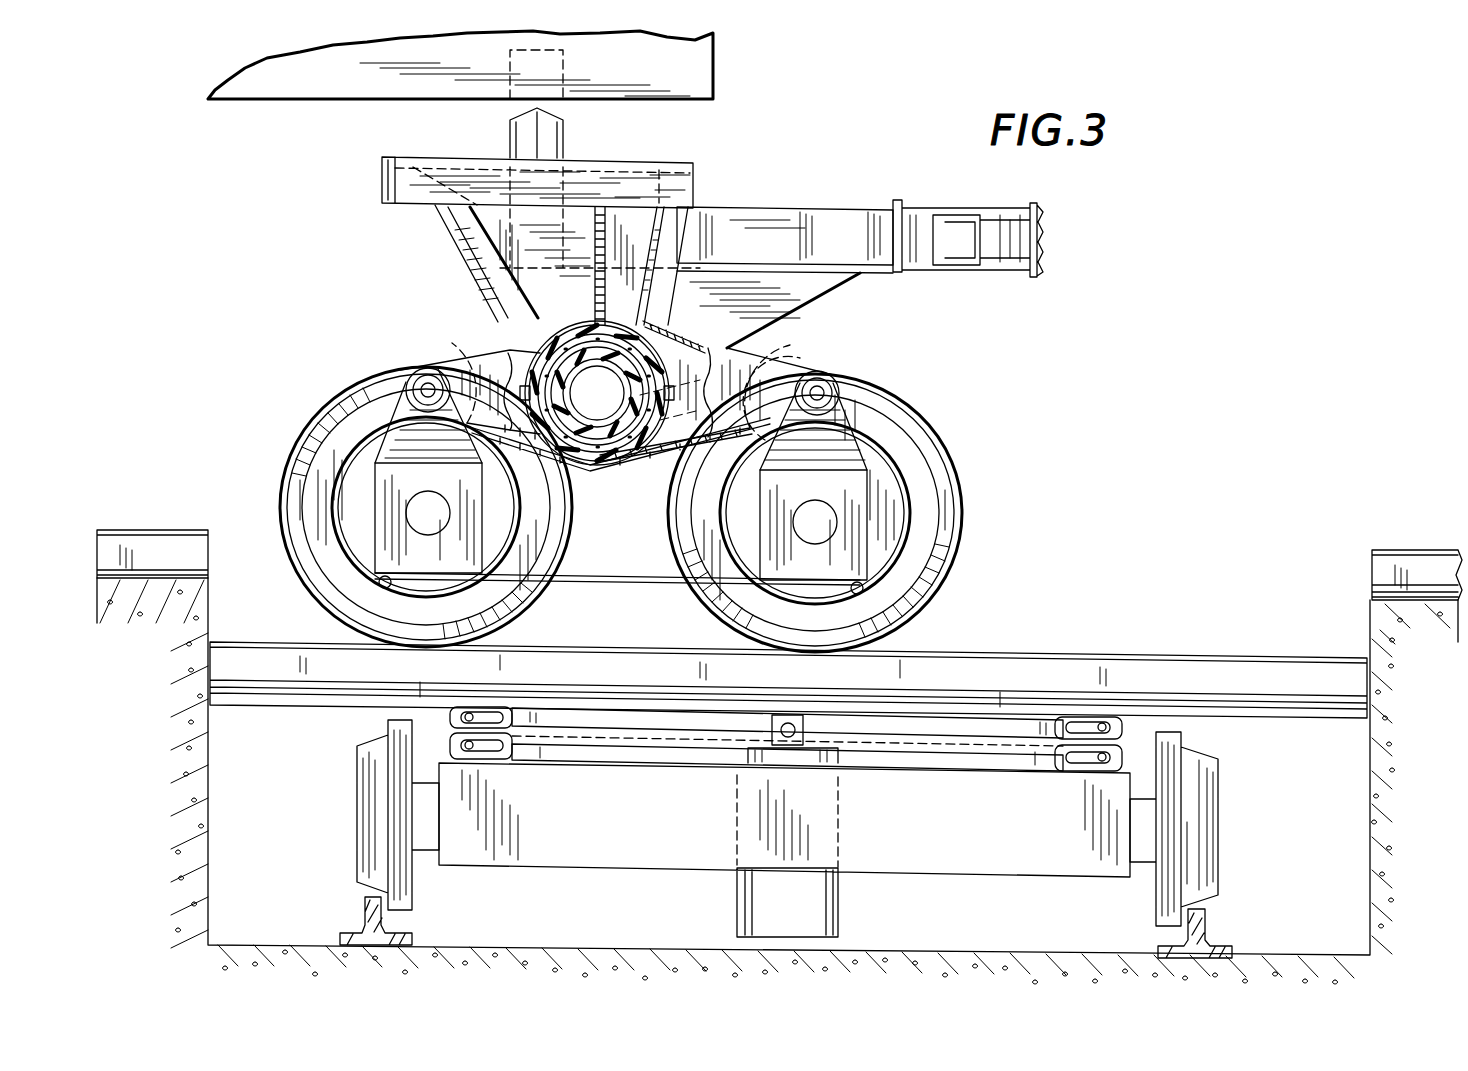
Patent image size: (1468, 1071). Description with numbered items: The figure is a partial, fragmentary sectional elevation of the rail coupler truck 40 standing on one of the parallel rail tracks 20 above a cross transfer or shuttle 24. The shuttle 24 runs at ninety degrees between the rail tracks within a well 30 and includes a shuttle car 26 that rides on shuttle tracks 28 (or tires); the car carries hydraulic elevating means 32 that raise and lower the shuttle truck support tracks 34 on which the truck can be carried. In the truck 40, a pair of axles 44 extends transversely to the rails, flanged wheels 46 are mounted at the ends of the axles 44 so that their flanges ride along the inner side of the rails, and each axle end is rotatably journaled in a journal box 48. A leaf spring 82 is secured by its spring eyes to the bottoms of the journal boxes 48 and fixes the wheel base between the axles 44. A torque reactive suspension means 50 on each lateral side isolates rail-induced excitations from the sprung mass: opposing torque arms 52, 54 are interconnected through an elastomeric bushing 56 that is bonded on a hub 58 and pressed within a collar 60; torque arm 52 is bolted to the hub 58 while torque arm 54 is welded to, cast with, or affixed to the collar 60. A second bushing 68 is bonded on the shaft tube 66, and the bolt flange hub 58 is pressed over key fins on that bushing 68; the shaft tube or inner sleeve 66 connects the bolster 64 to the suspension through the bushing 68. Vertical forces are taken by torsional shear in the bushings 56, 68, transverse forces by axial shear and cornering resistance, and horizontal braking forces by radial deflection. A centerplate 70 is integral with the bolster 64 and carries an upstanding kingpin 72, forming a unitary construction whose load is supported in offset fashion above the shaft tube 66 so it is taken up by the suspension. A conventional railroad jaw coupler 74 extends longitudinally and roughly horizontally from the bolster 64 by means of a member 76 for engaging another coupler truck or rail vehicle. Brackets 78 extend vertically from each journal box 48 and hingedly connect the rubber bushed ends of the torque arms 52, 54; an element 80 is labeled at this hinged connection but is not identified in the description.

The rail tracks 20 is at (201, 528).
The cross transfer or shuttle 24 is at (294, 872).
The shuttle car 26 is at (1030, 877).
The shuttle tracks 28 is at (363, 905).
The well 30 is at (1372, 628).
The elevating means 32 is at (1005, 725).
The shuttle truck support tracks 34 is at (1110, 659).
The rail coupler truck 40 is at (896, 388).
The axles 44 is at (442, 488).
The flanged wheels 46 is at (302, 452).
The journal boxes 48 is at (380, 537).
The torque reactive suspension means 50 is at (495, 340).
The torque arm 52 is at (470, 366).
The opposing torque arm 54 is at (785, 360).
The elastomeric bushing 56 is at (590, 470).
The hub 58 is at (700, 346).
The collar 60 is at (612, 462).
The bolster 64 is at (522, 284).
The shaft tube 66 is at (663, 326).
The second bushing 68 is at (585, 328).
The centerplate 70 is at (620, 178).
The kingpin 72 is at (565, 136).
The jaw coupler 74 is at (920, 210).
The member 76 is at (786, 243).
The brackets 78 is at (398, 437).
The pivot pin 80 is at (421, 371).
The leaf spring 82 is at (618, 583).